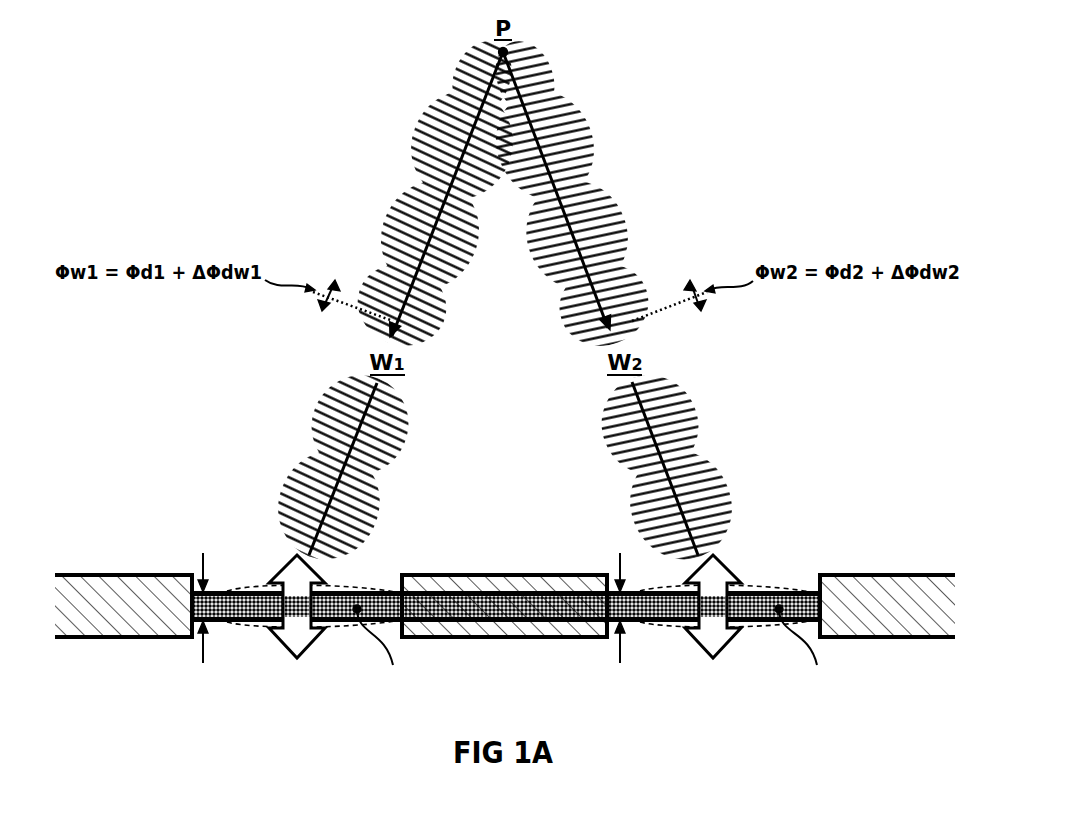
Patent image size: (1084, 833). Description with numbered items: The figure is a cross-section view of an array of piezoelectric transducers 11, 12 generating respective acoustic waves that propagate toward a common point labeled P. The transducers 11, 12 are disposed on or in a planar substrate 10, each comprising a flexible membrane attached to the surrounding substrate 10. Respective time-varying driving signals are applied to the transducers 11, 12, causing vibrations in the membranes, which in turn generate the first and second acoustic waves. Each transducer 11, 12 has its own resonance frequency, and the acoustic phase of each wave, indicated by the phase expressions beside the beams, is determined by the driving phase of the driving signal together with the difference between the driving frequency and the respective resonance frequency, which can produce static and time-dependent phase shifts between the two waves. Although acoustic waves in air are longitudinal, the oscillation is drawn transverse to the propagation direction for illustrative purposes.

The substrate 10 is at (135, 530).
The transducer 11 is at (285, 620).
The transducer 12 is at (701, 620).